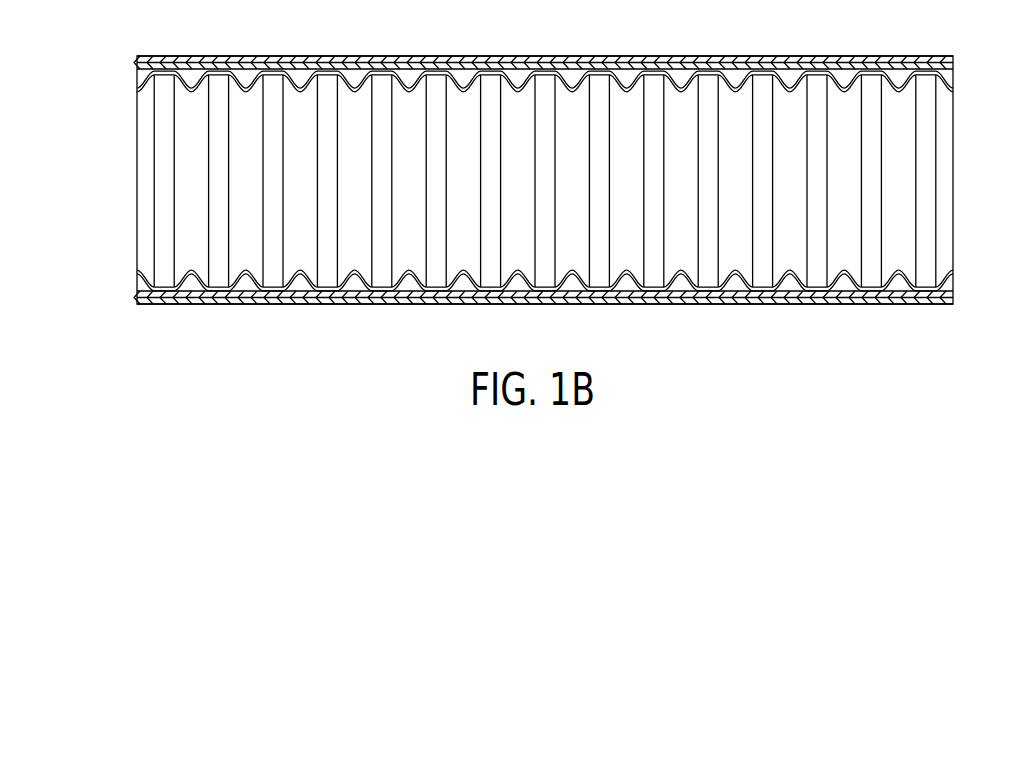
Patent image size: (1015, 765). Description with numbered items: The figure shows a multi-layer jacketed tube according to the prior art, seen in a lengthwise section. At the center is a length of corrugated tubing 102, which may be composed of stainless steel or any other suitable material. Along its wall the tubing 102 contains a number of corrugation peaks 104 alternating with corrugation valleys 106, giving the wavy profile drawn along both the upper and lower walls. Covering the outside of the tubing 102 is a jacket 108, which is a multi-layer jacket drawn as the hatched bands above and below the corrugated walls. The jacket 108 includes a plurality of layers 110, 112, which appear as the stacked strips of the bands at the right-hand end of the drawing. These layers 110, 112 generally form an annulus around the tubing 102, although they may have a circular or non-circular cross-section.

The corrugated tubing 102 is at (147, 91).
The corrugation peaks 104 is at (164, 91).
The corrugation valleys 106 is at (239, 97).
The jacket 108 is at (130, 295).
The layer 110 is at (949, 285).
The layer 112 is at (955, 306).